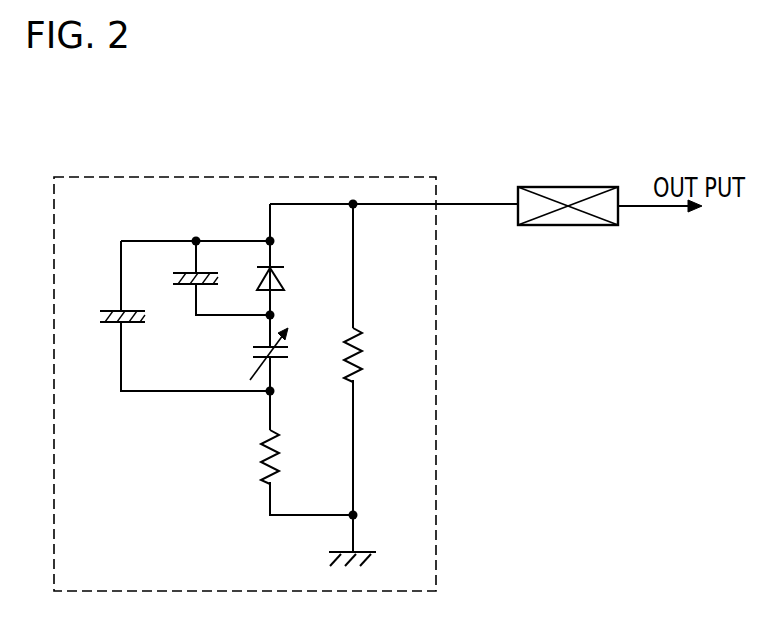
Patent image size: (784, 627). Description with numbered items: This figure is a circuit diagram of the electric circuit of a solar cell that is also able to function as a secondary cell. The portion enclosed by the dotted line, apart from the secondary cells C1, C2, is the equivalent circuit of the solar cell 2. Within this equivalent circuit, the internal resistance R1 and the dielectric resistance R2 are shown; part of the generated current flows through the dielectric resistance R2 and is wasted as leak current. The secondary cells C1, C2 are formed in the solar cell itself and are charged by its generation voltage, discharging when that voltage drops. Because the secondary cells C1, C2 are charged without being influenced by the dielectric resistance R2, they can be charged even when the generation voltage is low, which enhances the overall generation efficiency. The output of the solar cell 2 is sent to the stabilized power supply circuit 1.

The stabilized power supply circuit 1 is at (570, 187).
The solar cell 2 is at (340, 177).
The secondary cell C1 is at (178, 279).
The secondary cell C2 is at (105, 317).
The internal resistance R1 is at (288, 457).
The dielectric resistance R2 is at (371, 355).